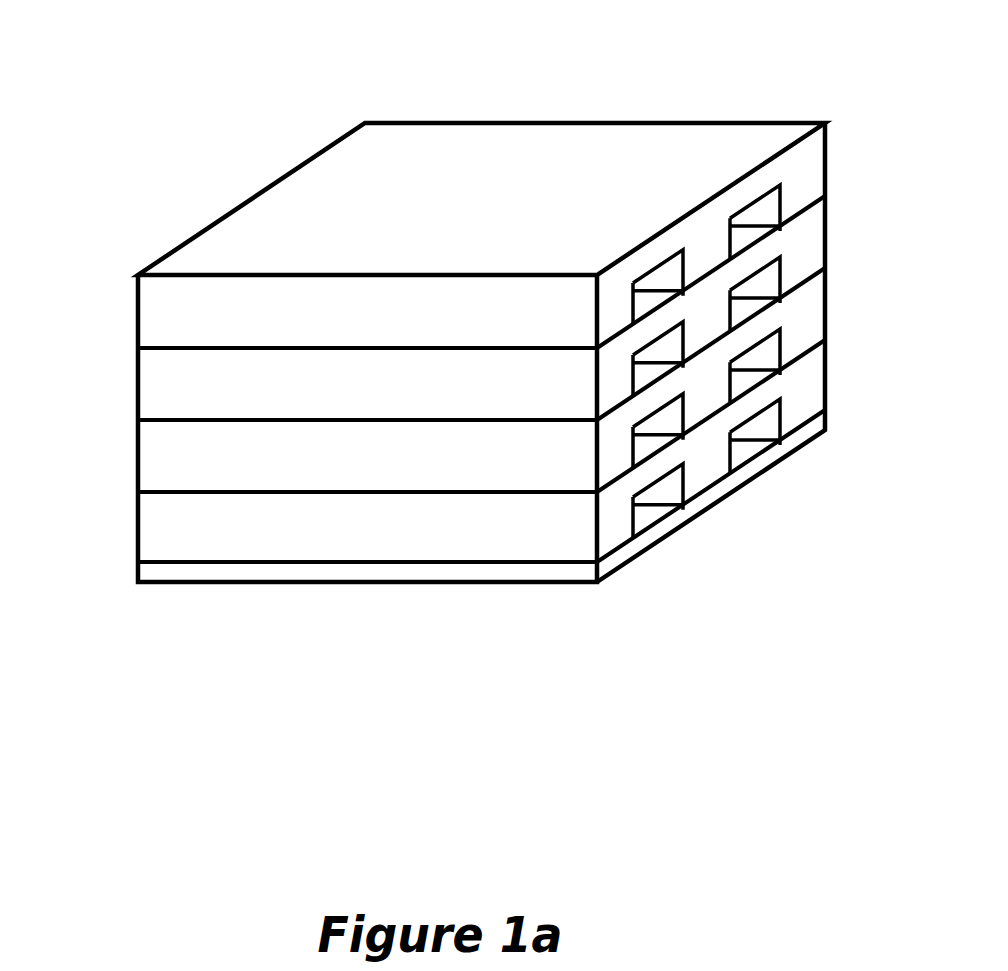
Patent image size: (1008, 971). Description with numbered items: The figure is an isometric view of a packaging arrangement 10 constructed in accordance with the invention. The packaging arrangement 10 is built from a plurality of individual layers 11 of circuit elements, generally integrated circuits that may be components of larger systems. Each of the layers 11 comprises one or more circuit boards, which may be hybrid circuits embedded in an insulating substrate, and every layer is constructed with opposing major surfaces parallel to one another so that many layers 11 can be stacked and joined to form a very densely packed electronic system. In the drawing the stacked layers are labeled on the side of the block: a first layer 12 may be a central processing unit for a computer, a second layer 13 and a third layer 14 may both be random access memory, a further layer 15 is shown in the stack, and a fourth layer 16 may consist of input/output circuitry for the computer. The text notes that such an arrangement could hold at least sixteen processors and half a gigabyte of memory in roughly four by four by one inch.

The packaging arrangement 10 is at (213, 39).
The individual layers 11 is at (157, 575).
The first layer 12 is at (813, 171).
The second layer 13 is at (813, 240).
The third layer 14 is at (813, 312).
The fourth layer 15 is at (813, 378).
The fourth layer 16 is at (813, 425).